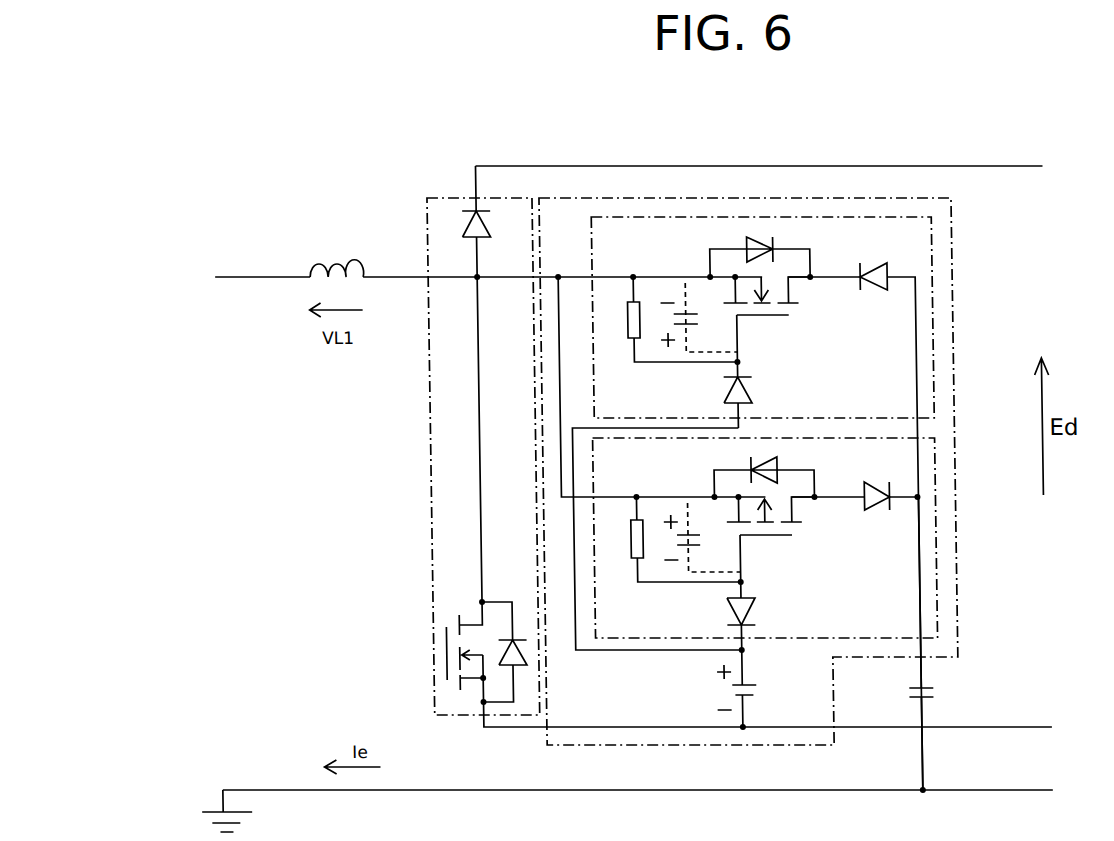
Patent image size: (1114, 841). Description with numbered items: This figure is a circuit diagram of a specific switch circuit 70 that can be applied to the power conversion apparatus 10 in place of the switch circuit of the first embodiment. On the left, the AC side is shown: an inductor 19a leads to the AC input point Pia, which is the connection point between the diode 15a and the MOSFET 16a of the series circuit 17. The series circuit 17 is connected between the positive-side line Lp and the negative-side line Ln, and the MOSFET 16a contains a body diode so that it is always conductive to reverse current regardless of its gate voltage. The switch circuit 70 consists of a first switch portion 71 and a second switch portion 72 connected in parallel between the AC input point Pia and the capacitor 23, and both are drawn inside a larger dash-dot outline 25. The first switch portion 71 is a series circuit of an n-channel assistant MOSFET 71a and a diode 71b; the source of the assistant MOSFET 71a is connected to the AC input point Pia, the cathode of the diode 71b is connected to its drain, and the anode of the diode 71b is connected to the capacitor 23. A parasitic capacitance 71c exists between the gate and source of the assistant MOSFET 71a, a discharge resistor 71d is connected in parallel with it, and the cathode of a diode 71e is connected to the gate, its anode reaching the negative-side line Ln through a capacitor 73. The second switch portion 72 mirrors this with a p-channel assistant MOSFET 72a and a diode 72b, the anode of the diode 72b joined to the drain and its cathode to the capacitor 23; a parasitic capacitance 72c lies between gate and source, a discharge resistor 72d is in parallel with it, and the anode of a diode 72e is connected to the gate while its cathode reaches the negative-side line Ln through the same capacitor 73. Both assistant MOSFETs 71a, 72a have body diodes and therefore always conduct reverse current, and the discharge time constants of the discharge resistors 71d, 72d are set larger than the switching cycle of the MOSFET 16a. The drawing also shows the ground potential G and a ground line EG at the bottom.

The power conversion apparatus 10 is at (279, 146).
The series circuit 17 is at (446, 198).
The diode 15a is at (462, 226).
The inductor 19a is at (330, 265).
The MOSFET 16a is at (459, 592).
The battery unit 25 is at (953, 213).
The switch circuit 70 is at (953, 300).
The first switch portion 71 is at (933, 240).
The assistant MOSFET 71a is at (792, 246).
The diode 71b is at (874, 292).
The parasitic capacitance 71c is at (696, 322).
The discharge resistor 71d is at (628, 330).
The diode 71e is at (750, 383).
The second switch portion 72 is at (937, 570).
The assistant MOSFET 72a is at (794, 466).
The diode 72b is at (878, 515).
The parasitic capacitance 72c is at (698, 548).
The discharge resistor 72d is at (632, 556).
The diode 72e is at (751, 602).
The capacitor 73 is at (751, 684).
The capacitor 23 is at (928, 689).
The positive-side line Lp is at (739, 160).
The negative-side line Ln is at (866, 730).
The ground line EG is at (675, 792).
The ground potential G is at (218, 811).
The AC input point Pia is at (475, 283).